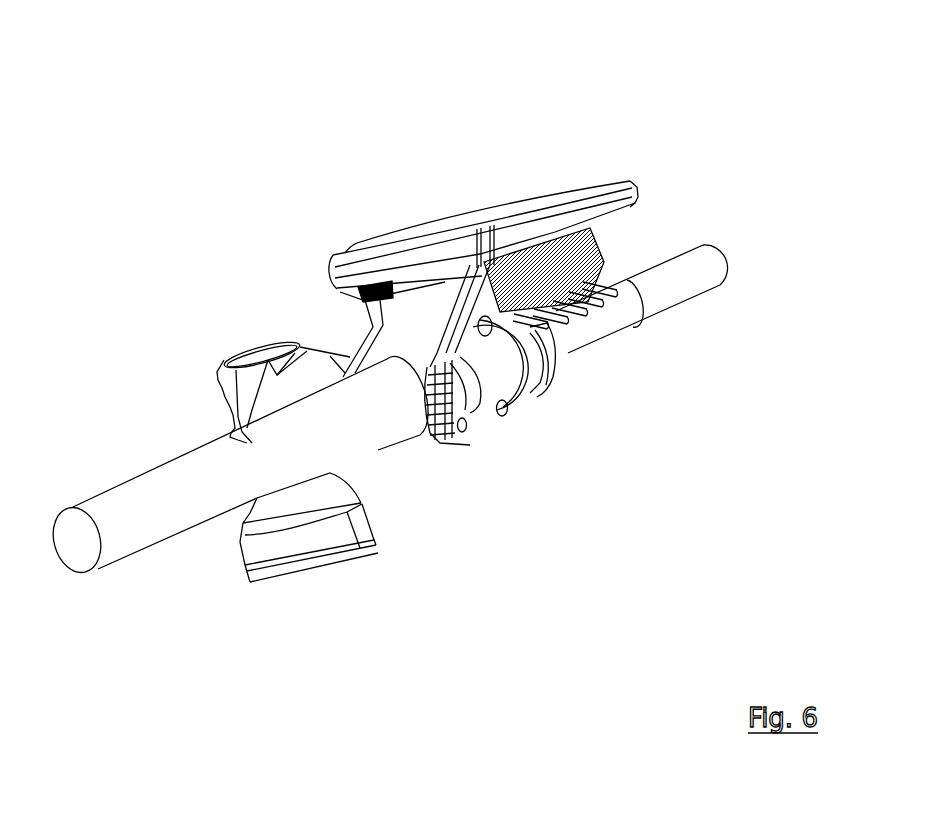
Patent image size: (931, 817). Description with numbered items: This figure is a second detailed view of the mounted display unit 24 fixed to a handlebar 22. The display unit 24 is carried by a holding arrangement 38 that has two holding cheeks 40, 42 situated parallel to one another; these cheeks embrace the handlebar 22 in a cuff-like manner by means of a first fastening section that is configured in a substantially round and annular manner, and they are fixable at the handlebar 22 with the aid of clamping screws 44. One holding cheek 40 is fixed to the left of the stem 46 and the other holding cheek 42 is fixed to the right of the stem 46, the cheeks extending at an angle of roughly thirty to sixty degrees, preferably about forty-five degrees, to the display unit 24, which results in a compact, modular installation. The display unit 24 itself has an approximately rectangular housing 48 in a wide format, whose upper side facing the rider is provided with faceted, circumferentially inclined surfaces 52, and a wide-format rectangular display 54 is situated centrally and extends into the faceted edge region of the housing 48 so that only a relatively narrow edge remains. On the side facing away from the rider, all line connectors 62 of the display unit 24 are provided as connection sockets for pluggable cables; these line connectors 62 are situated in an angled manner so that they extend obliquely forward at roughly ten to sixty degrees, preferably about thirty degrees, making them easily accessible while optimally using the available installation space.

The handlebar 22 is at (357, 443).
The display unit 24 is at (612, 158).
The holding arrangement 38 is at (313, 313).
The holding cheek 40 is at (537, 352).
The holding cheek 42 is at (480, 424).
The clamping screw 44 is at (508, 407).
The stem 46 is at (335, 357).
The housing 48 is at (630, 200).
The inclined surface 52 is at (350, 253).
The display 54 is at (492, 218).
The line connector 62 is at (595, 278).